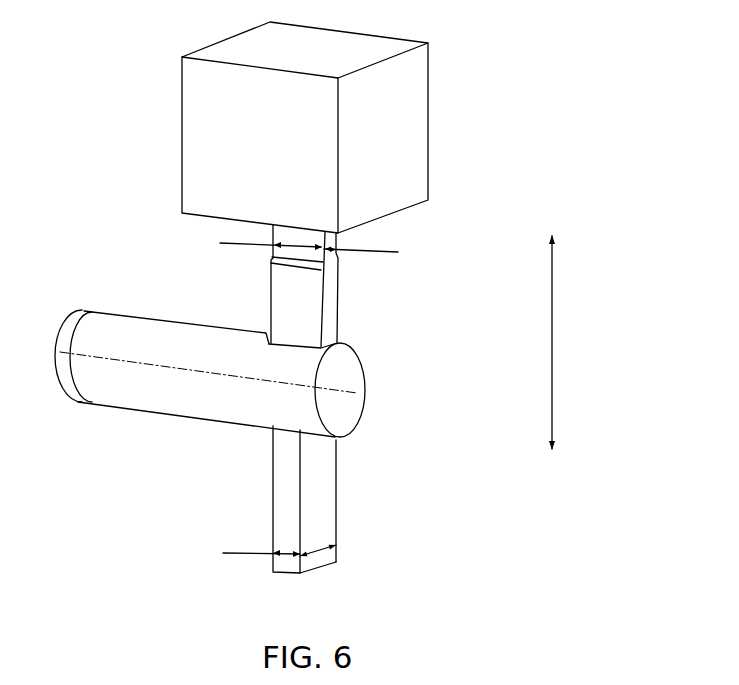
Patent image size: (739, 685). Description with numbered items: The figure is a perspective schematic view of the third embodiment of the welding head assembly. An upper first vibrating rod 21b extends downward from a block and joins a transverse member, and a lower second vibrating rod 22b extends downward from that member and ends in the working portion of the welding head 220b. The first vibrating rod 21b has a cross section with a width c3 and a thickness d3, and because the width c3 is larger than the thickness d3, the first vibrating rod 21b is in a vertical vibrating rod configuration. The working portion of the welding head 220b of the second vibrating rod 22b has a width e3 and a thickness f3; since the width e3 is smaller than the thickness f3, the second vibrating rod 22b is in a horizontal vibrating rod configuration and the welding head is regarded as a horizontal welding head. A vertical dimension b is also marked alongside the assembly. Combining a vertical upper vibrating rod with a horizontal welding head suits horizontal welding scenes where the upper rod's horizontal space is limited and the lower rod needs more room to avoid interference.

The first vibrating rod 21b is at (330, 307).
The second vibrating rod 22b is at (320, 493).
The working portion of the welding head 220b is at (327, 570).
The width of the first vibrating rod c3 is at (271, 236).
The thickness of the first vibrating rod d3 is at (361, 238).
The width of the working portion of the welding head e3 is at (261, 543).
The thickness of the working portion of the welding head f3 is at (318, 537).
The height dimension b is at (564, 342).